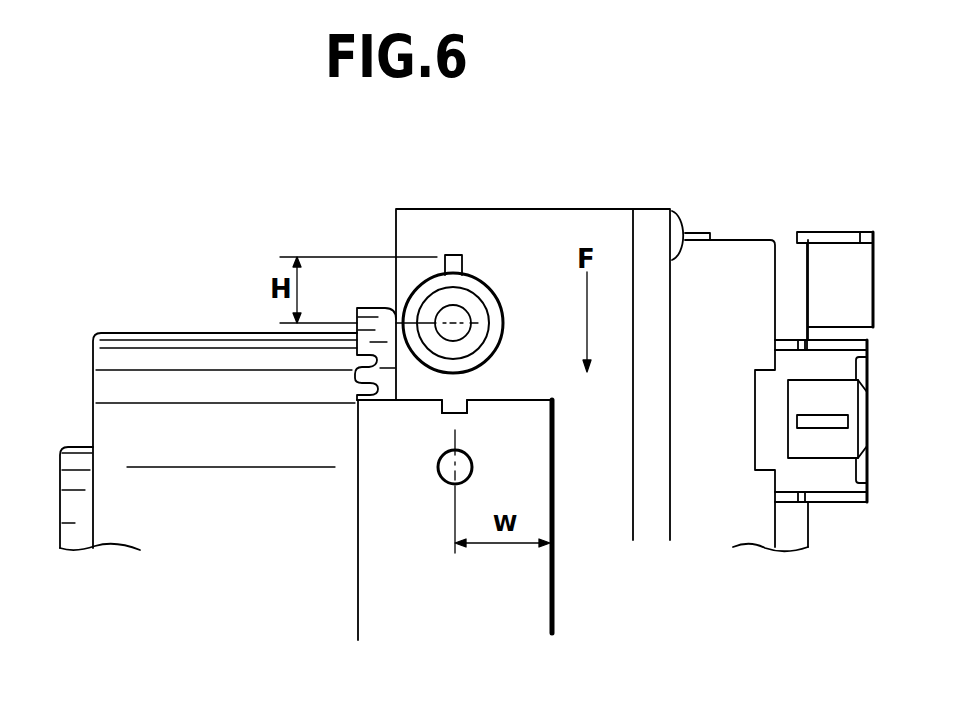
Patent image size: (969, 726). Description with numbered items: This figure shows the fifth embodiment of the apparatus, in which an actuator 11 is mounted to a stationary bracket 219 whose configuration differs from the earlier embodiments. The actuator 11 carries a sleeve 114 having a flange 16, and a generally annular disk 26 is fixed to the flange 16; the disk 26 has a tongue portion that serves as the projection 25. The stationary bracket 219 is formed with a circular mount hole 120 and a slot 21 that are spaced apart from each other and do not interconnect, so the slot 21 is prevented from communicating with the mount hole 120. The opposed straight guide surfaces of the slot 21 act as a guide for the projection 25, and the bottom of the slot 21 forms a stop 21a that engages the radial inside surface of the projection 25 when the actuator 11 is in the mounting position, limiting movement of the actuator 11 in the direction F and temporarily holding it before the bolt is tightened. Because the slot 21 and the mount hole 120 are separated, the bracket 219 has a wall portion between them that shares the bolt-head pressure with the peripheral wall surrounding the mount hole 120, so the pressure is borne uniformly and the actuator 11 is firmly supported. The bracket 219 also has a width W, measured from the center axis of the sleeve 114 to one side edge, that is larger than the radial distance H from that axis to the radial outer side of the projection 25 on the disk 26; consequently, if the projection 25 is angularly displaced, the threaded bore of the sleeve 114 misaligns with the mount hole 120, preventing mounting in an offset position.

The actuator 11 is at (558, 228).
The sleeve 114 is at (431, 299).
The projection 25 is at (453, 254).
The annular disk 26 is at (497, 290).
The flange 16 is at (478, 333).
The slot 21 is at (466, 400).
The stop 21a is at (450, 415).
The circular mount hole 120 is at (454, 486).
The stationary bracket 219 is at (557, 523).